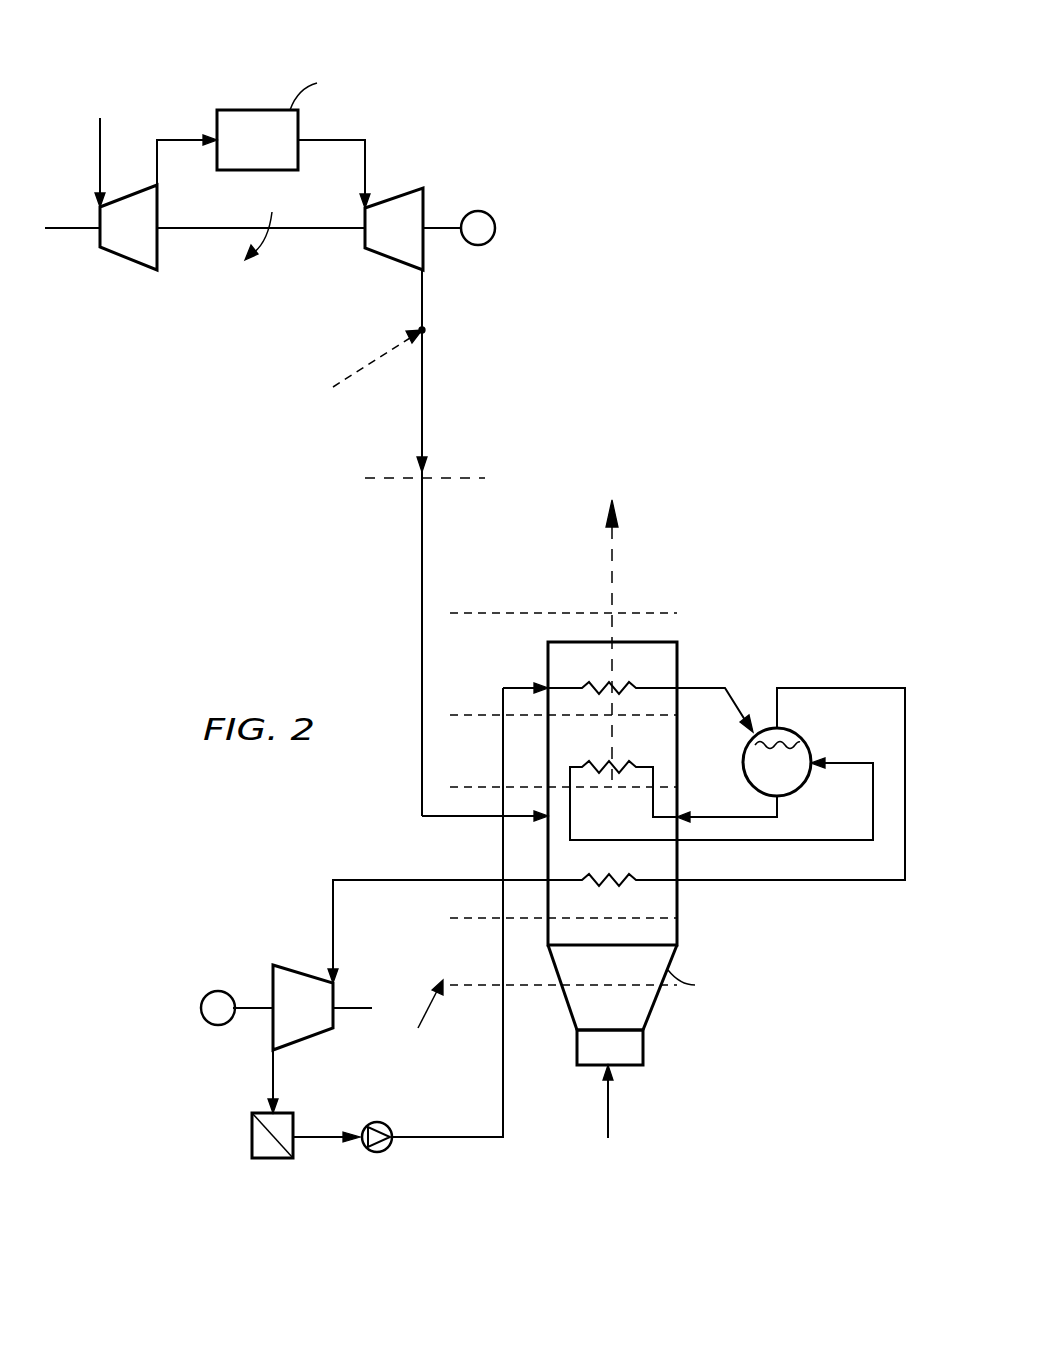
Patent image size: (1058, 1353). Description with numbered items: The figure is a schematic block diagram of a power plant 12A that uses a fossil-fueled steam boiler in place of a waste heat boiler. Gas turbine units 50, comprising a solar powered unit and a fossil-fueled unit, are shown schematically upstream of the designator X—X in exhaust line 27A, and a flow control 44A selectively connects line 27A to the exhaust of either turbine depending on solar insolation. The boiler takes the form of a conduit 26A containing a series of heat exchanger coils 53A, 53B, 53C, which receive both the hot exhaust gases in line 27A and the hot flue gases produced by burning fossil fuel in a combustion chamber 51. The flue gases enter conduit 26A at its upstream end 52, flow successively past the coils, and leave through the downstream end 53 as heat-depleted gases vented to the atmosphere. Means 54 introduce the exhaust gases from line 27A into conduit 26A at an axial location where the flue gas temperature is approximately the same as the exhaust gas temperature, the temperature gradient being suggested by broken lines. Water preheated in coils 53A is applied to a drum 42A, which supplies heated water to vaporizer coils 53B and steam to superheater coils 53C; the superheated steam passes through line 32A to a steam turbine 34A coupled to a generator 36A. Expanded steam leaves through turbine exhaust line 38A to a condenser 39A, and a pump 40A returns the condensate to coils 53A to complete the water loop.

The gas turbine units 50 is at (193, 323).
The flow control 44A is at (365, 362).
The exhaust line 27A is at (422, 538).
The means for introducing exhaust gases 54 is at (443, 818).
The power plant 12A is at (760, 548).
The downstream end 53 is at (677, 668).
The heat exchanger coils 53A is at (603, 687).
The vaporizer coils 53B is at (573, 815).
The superheater coils 53C is at (612, 877).
The drum 42A is at (798, 732).
The steam line 32A is at (412, 873).
The conduit 26A is at (677, 908).
The upstream end 52 is at (602, 1028).
The combustion chamber 51 is at (577, 1047).
The steam turbine 34A is at (333, 992).
The generator 36A is at (218, 1025).
The turbine exhaust line 38A is at (273, 1068).
The condenser 39A is at (293, 1123).
The pump 40A is at (392, 1122).